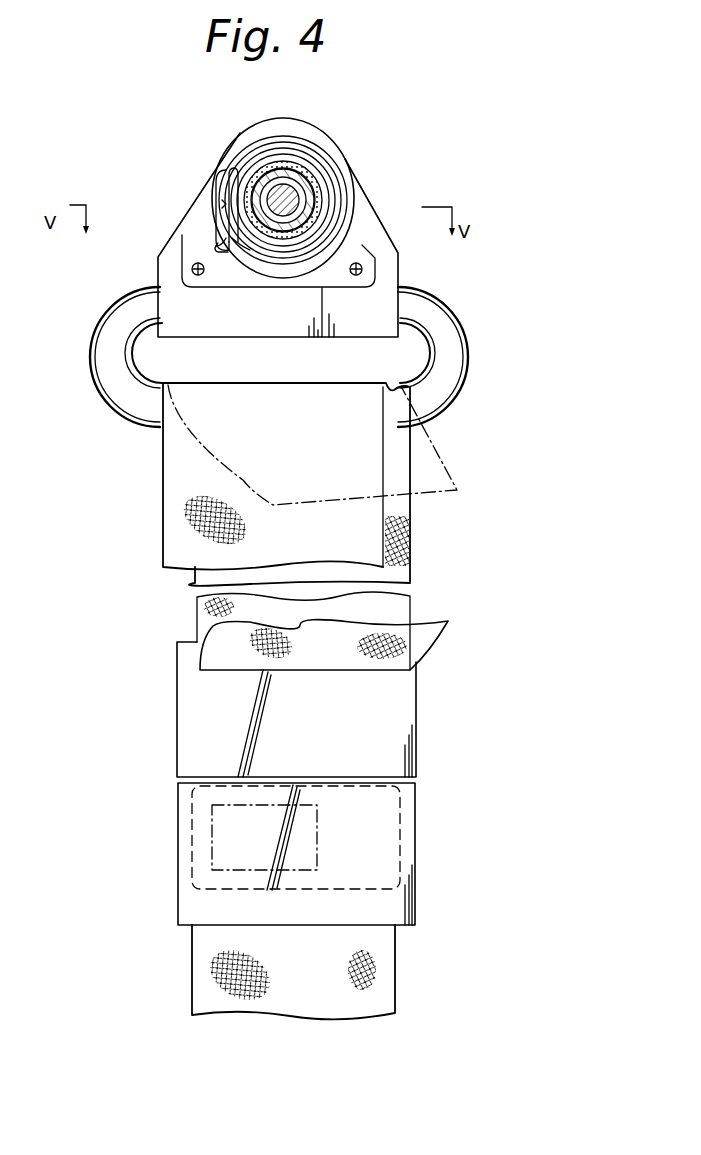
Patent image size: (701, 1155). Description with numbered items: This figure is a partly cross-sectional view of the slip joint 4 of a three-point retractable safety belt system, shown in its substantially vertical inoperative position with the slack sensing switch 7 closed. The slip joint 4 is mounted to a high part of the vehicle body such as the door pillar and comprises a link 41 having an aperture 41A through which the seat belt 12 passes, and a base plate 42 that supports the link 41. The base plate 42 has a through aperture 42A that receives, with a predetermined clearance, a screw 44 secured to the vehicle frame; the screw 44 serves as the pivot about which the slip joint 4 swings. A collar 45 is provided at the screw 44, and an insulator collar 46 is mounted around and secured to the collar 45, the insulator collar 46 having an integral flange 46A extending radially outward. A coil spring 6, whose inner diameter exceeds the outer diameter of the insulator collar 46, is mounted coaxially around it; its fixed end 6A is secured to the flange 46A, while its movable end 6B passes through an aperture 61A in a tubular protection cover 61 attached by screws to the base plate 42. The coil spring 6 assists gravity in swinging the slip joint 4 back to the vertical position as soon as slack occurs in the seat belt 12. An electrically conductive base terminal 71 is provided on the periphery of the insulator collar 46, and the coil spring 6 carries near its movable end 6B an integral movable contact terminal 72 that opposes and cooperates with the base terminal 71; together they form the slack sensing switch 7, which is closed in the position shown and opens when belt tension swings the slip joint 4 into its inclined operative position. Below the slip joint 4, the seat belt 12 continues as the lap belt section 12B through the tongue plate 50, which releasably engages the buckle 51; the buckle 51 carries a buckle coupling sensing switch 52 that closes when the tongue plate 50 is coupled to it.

The slip joint 4 is at (491, 285).
The coil spring 6 is at (346, 165).
The fixed end 6A is at (346, 202).
The movable end 6B is at (220, 243).
The slack sensing switch 7 is at (155, 110).
The base terminal 71 is at (232, 162).
The movable contact terminal 72 is at (228, 180).
The seat belt 12 is at (157, 526).
The lap belt section 12B is at (457, 485).
The link 41 is at (93, 338).
The aperture 41A is at (145, 385).
The base plate 42 is at (170, 268).
The through aperture 42A is at (268, 177).
The screw 44 is at (318, 152).
The collar 45 is at (282, 170).
The insulator collar 46 is at (250, 250).
The flange 46A is at (295, 160).
The tongue plate 50 is at (193, 724).
The buckle 51 is at (196, 897).
The buckle coupling sensing switch 52 is at (210, 850).
The tubular protection cover 61 is at (183, 257).
The aperture 61A is at (226, 238).